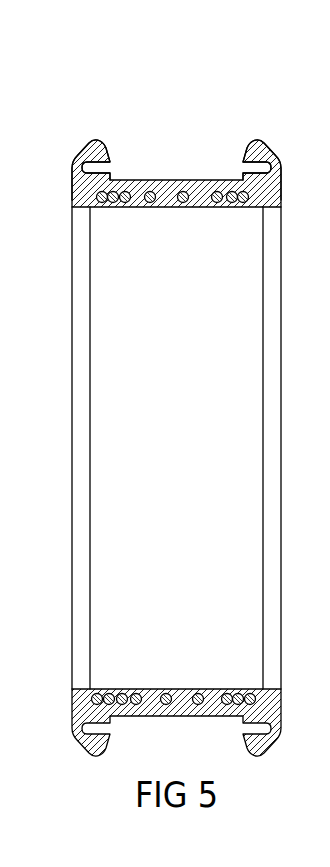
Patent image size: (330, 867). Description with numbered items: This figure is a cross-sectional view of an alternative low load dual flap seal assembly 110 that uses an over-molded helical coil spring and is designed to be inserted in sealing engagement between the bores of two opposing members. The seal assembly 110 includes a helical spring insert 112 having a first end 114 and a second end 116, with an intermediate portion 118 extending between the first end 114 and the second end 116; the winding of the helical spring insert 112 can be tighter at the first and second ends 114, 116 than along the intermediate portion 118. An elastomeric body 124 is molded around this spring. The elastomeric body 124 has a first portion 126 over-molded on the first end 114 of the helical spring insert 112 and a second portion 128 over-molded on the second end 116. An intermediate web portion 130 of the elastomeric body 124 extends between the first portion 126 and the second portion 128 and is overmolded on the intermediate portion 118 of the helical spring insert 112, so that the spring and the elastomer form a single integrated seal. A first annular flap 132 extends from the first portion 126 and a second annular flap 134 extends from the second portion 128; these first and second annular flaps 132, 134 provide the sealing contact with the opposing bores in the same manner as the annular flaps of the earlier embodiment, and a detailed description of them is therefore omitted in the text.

The low load dual flap seal assembly 110 is at (120, 112).
The helical spring insert 112 is at (148, 211).
The first end 114 is at (97, 689).
The second end 116 is at (252, 689).
The intermediate portion 118 is at (138, 689).
The elastomeric body 124 is at (204, 687).
The first portion 126 is at (110, 211).
The second portion 128 is at (246, 214).
The intermediate web portion 130 is at (185, 718).
The first annular flap 132 is at (71, 149).
The second annular flap 134 is at (271, 140).